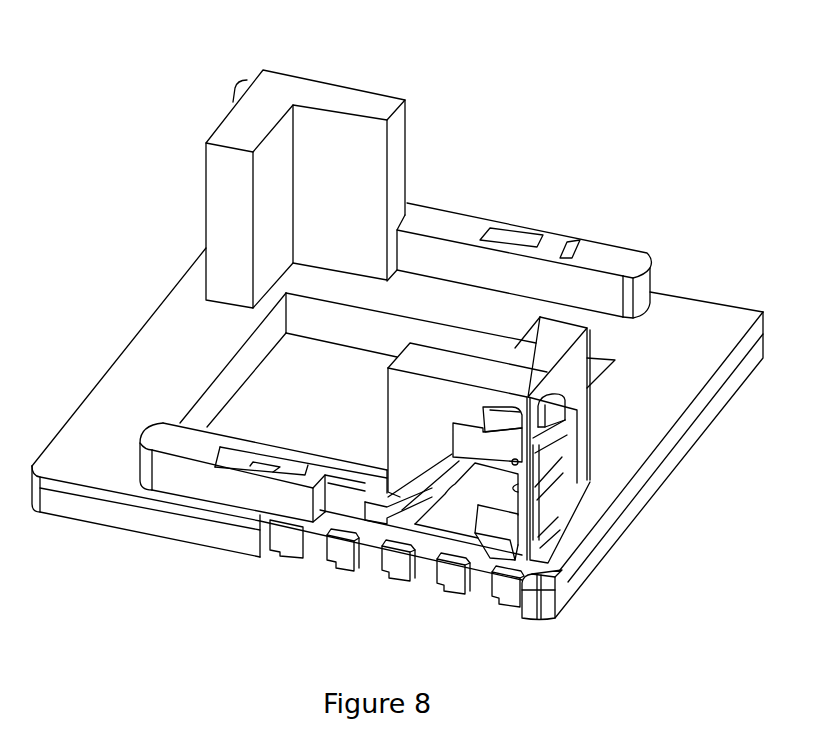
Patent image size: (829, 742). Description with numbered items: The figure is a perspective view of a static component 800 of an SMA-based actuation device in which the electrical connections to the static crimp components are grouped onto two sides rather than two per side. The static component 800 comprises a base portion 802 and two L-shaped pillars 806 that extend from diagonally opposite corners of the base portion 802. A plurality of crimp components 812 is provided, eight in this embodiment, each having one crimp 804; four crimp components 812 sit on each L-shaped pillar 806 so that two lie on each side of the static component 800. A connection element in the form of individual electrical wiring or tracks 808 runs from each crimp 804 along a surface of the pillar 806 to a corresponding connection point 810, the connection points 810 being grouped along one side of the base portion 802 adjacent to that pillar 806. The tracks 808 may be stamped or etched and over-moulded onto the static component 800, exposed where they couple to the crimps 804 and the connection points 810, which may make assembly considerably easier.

The static component 800 is at (172, 101).
The base portion 802 is at (640, 487).
The crimp 804 is at (500, 420).
The L-shaped pillar 806 is at (336, 100).
The electrical wiring or tracks 808 is at (350, 502).
The connection point 810 is at (341, 553).
The crimp component 812 is at (472, 450).